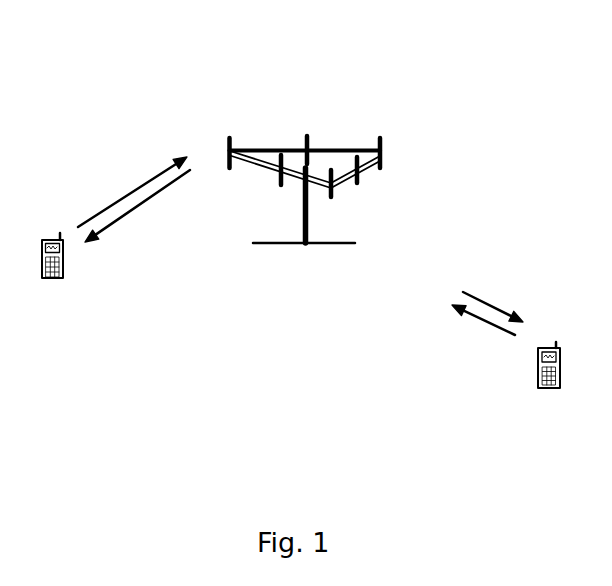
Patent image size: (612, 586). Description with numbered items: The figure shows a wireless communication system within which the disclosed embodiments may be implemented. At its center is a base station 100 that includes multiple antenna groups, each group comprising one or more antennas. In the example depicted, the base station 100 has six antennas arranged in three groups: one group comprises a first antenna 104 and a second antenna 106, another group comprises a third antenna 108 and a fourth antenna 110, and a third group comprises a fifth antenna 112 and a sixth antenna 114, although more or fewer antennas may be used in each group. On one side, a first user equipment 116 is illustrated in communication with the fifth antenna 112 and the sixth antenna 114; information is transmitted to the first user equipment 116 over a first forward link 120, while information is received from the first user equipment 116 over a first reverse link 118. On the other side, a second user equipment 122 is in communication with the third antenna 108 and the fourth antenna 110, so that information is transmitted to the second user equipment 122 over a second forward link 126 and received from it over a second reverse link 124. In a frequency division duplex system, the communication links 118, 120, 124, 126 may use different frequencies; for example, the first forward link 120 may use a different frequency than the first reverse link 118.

The base station 100 is at (287, 244).
The first antenna 104 is at (331, 197).
The second antenna 106 is at (357, 177).
The third antenna 108 is at (382, 163).
The fourth antenna 110 is at (307, 138).
The fifth antenna 112 is at (231, 149).
The sixth antenna 114 is at (280, 180).
The first user equipment 116 is at (52, 238).
The first reverse link 118 is at (129, 191).
The first forward link 120 is at (146, 203).
The second user equipment 122 is at (552, 345).
The second reverse link 124 is at (473, 318).
The second forward link 126 is at (495, 306).